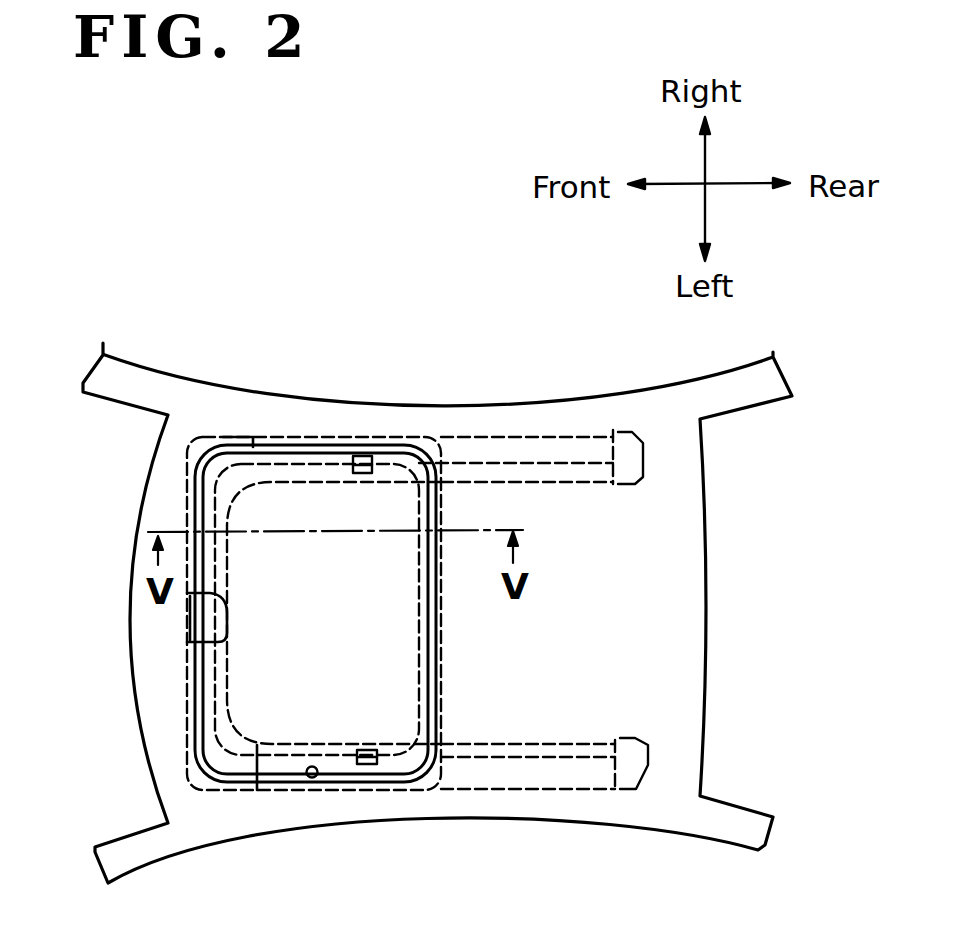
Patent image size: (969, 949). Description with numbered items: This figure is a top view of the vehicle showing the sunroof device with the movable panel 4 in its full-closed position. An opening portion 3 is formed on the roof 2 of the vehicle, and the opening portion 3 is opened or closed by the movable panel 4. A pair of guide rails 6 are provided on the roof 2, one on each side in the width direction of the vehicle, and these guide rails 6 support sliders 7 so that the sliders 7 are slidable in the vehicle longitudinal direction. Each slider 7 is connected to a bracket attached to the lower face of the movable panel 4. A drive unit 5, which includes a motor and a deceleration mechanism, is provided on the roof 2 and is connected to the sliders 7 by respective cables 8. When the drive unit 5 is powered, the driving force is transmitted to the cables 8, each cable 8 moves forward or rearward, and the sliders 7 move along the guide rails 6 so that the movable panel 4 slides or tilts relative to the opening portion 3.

The roof 2 is at (677, 673).
The opening portion 3 is at (313, 779).
The movable panel 4 is at (326, 497).
The drive unit 5 is at (187, 620).
The guide rail 6 is at (470, 443).
The slider 7 is at (363, 456).
The cable 8 is at (243, 455).